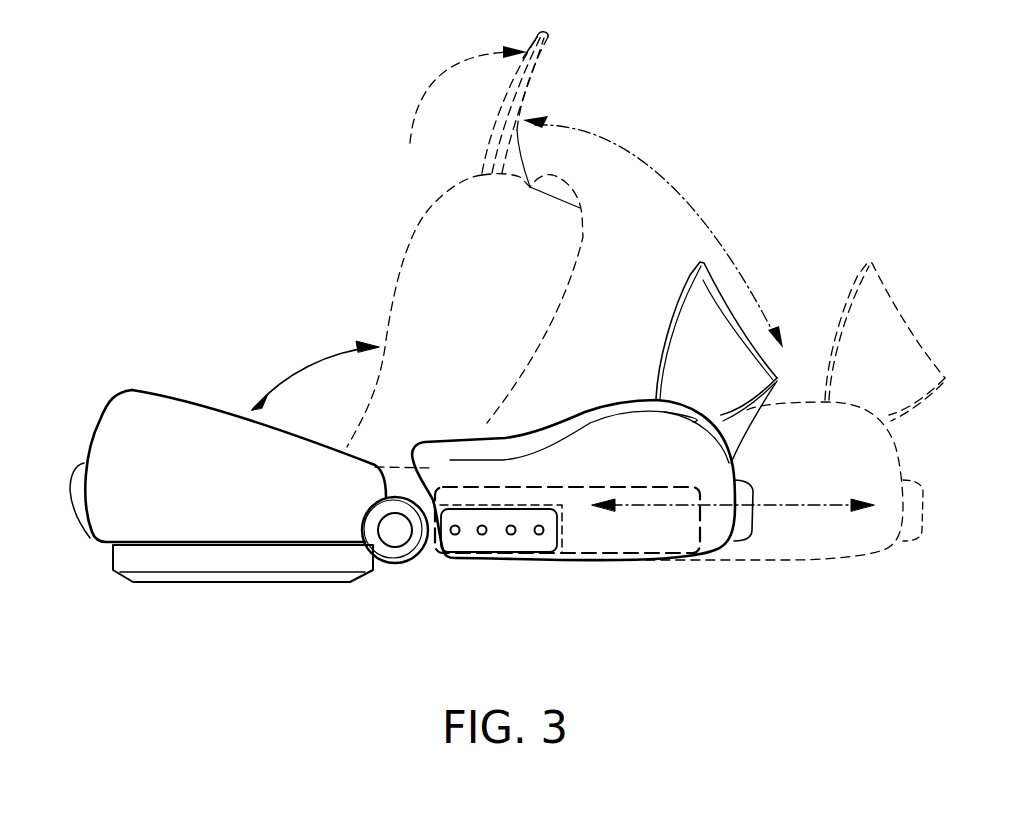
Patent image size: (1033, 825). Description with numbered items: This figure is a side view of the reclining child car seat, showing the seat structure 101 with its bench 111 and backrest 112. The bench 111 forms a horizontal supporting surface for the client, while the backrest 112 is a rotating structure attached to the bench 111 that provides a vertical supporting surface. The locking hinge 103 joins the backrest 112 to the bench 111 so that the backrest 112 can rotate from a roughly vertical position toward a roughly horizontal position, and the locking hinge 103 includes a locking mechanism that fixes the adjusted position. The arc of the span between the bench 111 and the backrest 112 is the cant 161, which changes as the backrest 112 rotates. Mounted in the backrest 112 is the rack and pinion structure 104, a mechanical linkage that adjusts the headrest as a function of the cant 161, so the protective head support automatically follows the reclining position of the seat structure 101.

The seat structure 101 is at (209, 433).
The bench 111 is at (188, 448).
The cant 161 is at (307, 360).
The locking hinge 103 is at (396, 547).
The rack and pinion structure 104 is at (527, 535).
The backrest 112 is at (518, 260).